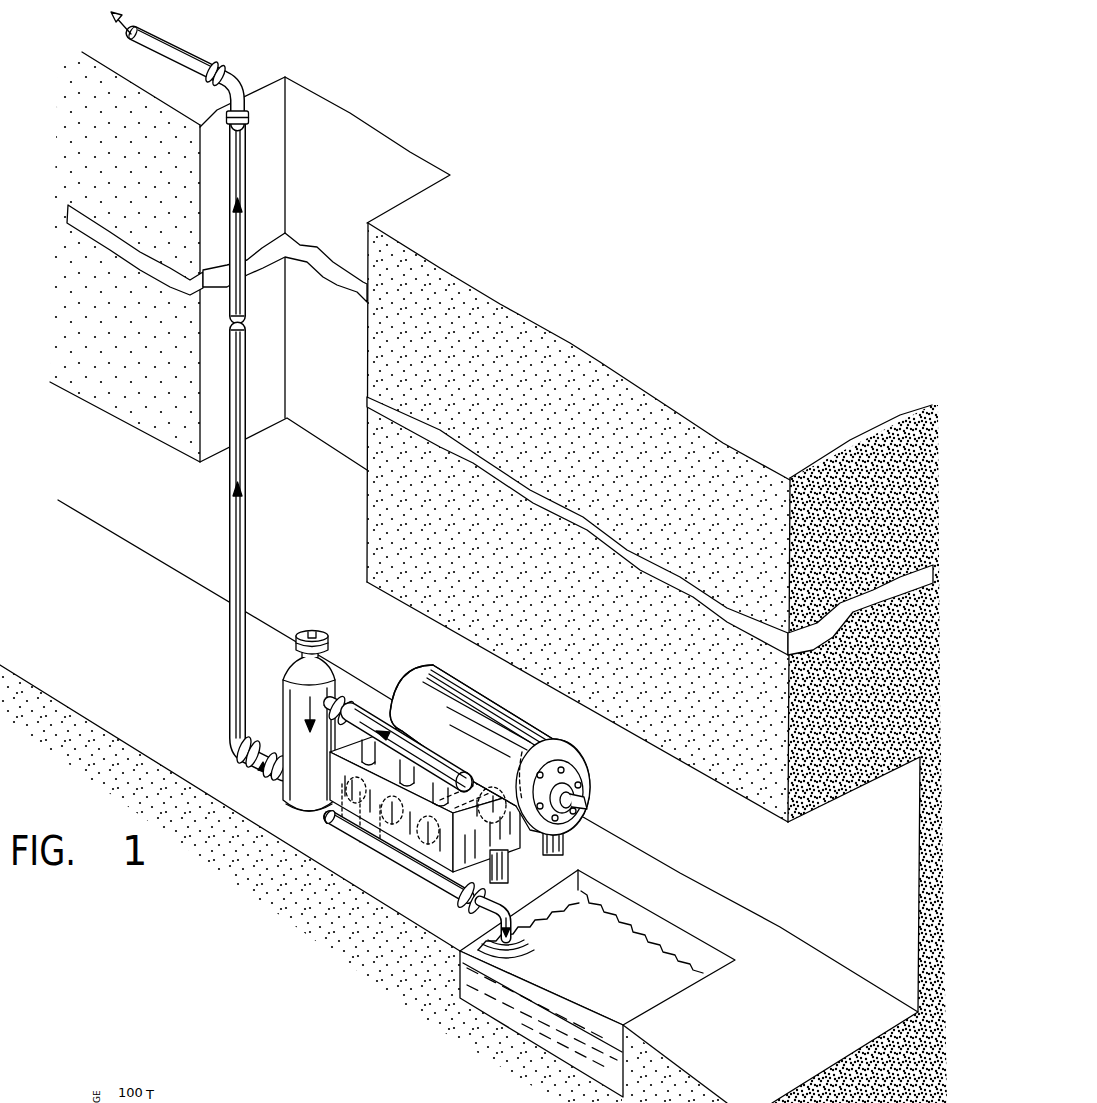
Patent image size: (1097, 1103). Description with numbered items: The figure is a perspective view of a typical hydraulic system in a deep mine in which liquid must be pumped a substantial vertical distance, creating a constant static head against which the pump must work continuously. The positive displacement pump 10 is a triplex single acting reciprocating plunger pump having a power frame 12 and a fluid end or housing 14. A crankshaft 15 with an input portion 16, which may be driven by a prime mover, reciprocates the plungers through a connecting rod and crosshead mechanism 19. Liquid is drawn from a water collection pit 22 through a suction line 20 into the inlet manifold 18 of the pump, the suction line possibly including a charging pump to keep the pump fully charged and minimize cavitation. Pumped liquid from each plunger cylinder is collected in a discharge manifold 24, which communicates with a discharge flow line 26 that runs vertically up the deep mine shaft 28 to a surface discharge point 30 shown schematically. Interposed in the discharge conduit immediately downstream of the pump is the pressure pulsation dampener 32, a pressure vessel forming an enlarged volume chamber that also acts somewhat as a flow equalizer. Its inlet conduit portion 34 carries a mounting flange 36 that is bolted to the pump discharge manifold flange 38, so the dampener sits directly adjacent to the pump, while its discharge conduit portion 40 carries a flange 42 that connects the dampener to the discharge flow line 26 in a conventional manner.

The positive displacement pump 10 is at (439, 656).
The power frame 12 is at (582, 752).
The fluid end or housing 14 is at (332, 825).
The crankshaft 15 is at (554, 730).
The input portion 16 is at (586, 807).
The inlet manifold 18 is at (418, 880).
The connecting rod and crosshead mechanism 19 is at (490, 789).
The suction line 20 is at (516, 898).
The water collection pit 22 is at (626, 905).
The discharge manifold 24 is at (402, 734).
The discharge flow line 26 is at (248, 478).
The deep mine shaft 28 is at (378, 593).
The surface discharge point 30 is at (185, 51).
The pressure pulsation dampener 32 is at (276, 699).
The inlet conduit portion 34 is at (349, 698).
The mounting flange 36 is at (300, 808).
The pump discharge manifold flange 38 is at (367, 700).
The discharge conduit portion 40 is at (276, 784).
The flange 42 is at (263, 774).